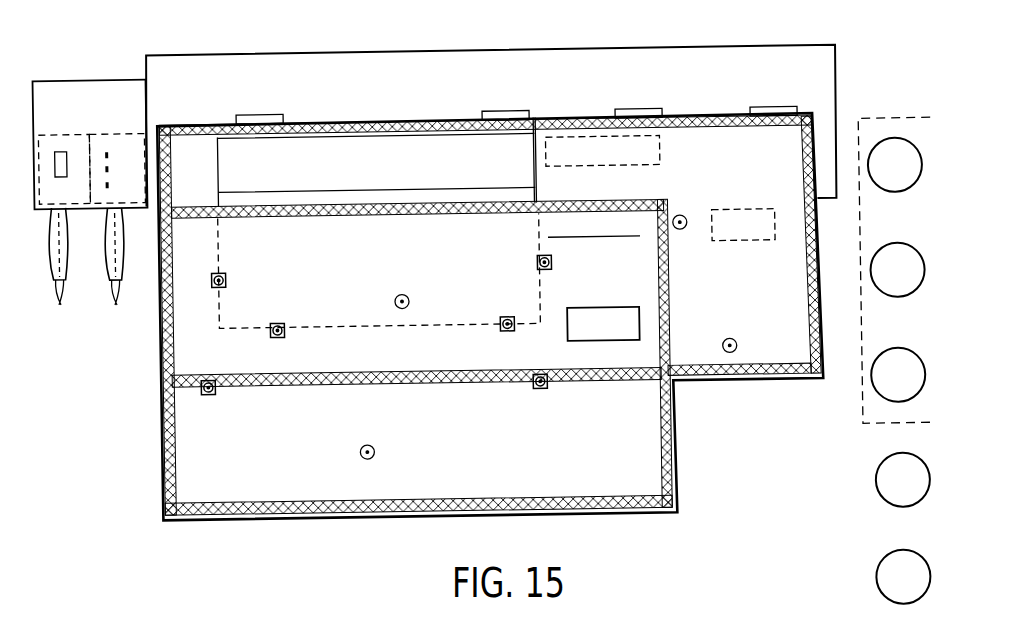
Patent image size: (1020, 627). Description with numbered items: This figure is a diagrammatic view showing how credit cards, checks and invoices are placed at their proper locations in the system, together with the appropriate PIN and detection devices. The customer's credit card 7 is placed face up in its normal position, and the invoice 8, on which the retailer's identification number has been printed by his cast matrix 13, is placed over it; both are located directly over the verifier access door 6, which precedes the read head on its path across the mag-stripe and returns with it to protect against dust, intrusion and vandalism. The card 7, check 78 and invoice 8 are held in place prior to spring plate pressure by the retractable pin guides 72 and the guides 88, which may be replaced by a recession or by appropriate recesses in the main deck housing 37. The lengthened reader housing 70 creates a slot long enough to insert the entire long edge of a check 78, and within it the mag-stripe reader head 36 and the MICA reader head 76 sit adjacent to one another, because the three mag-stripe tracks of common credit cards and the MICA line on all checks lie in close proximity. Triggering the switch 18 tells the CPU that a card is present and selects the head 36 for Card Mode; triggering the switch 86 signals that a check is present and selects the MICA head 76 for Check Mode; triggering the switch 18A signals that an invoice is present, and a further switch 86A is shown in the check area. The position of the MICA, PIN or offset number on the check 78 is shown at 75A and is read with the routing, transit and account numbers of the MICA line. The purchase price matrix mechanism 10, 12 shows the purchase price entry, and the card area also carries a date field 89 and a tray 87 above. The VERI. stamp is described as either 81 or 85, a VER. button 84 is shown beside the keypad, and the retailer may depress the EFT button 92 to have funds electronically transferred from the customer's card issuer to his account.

The verifier access door 6 is at (808, 85).
The credit card 7 is at (249, 258).
The invoice 8 is at (625, 406).
The purchase price matrix mechanism 10 is at (859, 356).
The purchase price matrix mechanism 12 is at (591, 241).
The cast matrix 13 is at (269, 368).
The card switch 18 is at (396, 308).
The invoice switch 18A is at (373, 446).
The mag-stripe reader head 36 is at (125, 128).
The main deck housing 37 is at (121, 338).
The reader housing 70 is at (83, 81).
The retractable pin guides 72 is at (215, 286).
The MICA PIN position 75A is at (662, 156).
The MICA reader head 76 is at (68, 128).
The check 78 is at (780, 159).
The VERI. stamp 81 is at (741, 211).
The VER. button 84 is at (875, 492).
The VERI. stamp 85 is at (604, 340).
The check switch 86 is at (739, 349).
The switch 86A is at (682, 233).
The tray 87 is at (405, 158).
The guides 88 is at (271, 114).
The date field 89 is at (442, 369).
The EFT button 92 is at (874, 571).